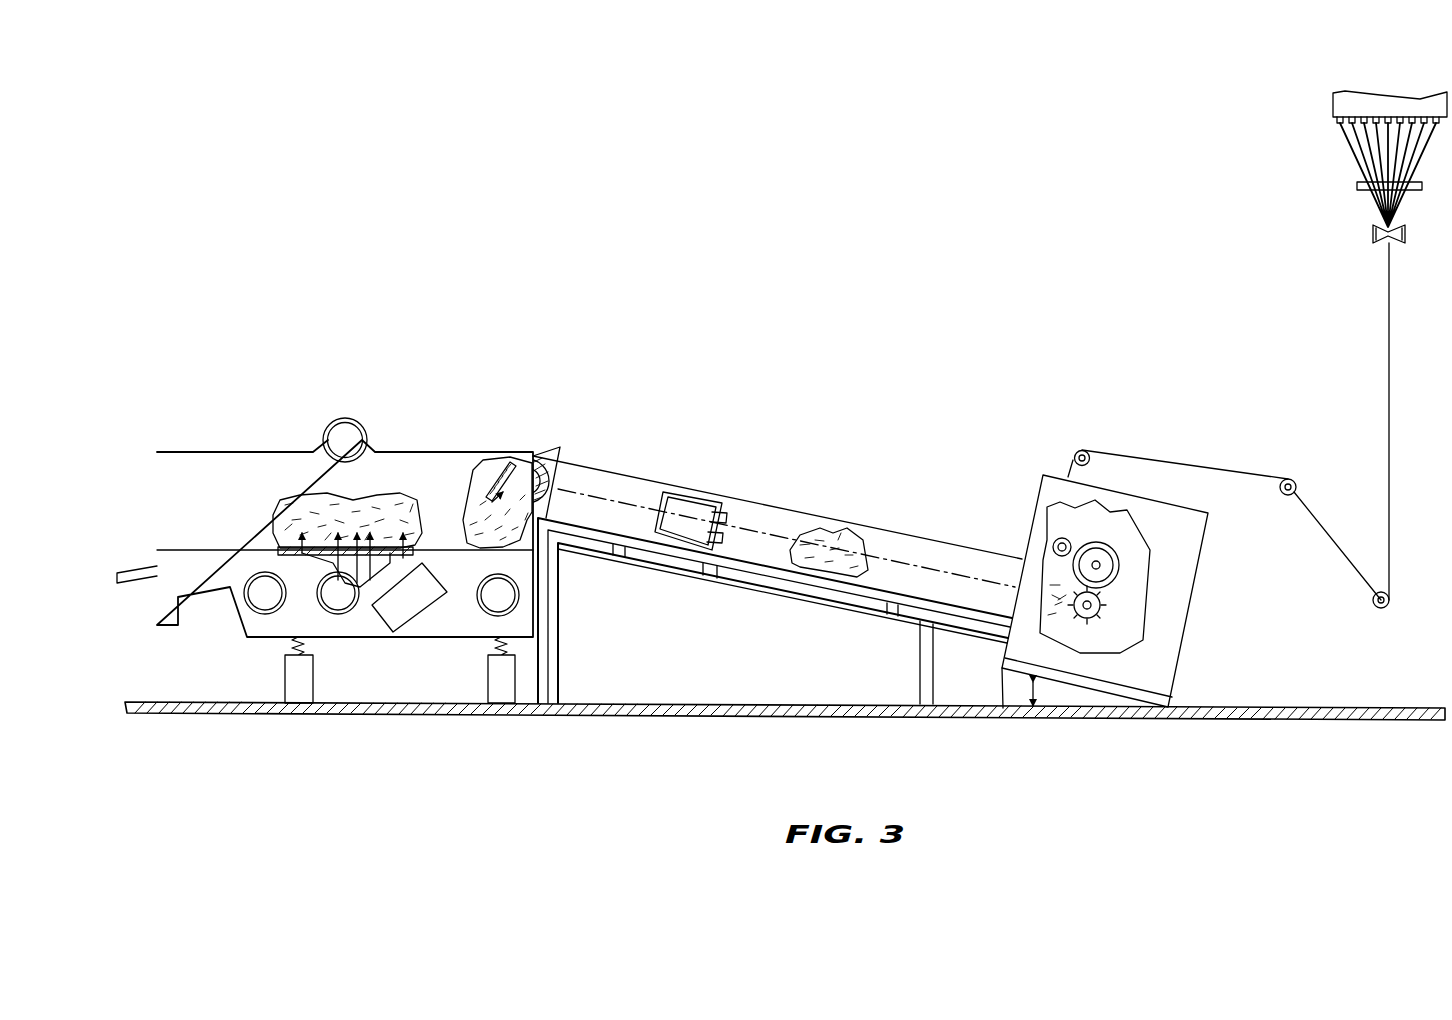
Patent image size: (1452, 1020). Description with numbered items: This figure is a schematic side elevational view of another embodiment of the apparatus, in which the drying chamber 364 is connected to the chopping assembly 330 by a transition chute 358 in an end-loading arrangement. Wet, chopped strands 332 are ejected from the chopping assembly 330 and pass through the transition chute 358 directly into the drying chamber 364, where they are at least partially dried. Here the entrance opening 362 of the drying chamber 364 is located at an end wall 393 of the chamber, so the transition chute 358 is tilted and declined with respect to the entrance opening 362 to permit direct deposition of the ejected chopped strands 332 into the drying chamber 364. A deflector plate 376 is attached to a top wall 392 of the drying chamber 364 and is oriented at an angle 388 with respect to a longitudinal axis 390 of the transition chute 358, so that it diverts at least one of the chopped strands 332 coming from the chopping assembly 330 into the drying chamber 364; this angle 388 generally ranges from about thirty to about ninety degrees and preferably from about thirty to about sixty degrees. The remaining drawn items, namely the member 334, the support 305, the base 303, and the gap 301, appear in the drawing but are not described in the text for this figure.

The drying chamber 364 is at (157, 513).
The top wall 392 is at (407, 462).
The deflector plate 376 is at (475, 467).
The entrance opening 362 is at (538, 458).
The angle 388 is at (556, 472).
The transition chute 358 is at (612, 470).
The longitudinal axis 390 is at (752, 527).
The chopped strands 332 is at (843, 530).
The pivot arm 334 is at (1013, 583).
The chopping assembly 330 is at (1208, 563).
The end wall 393 is at (542, 552).
The support post 305 is at (740, 590).
The base 303 is at (1002, 688).
The gap 301 is at (1030, 692).